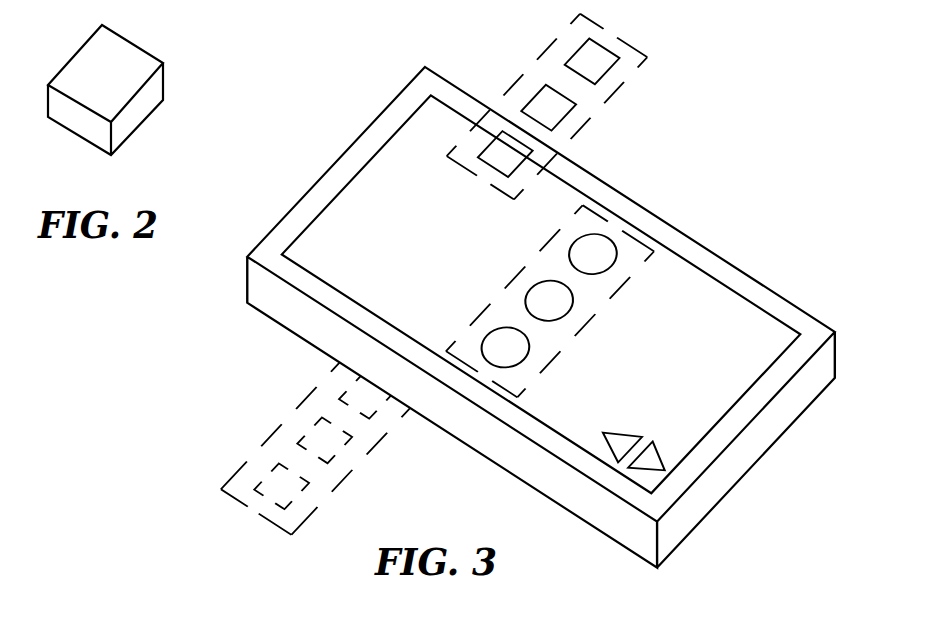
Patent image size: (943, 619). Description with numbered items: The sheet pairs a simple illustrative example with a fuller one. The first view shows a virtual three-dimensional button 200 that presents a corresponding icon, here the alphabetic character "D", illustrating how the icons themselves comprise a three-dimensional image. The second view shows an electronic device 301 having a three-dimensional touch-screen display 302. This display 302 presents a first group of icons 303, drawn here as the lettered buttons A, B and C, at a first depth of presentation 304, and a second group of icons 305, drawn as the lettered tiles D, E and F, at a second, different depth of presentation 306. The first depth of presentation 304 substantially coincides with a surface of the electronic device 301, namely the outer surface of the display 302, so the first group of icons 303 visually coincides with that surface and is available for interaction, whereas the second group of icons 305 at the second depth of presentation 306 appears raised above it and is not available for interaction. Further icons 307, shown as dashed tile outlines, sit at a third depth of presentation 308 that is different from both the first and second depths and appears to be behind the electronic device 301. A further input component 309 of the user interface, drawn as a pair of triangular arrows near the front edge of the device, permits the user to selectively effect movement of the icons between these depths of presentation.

In FIG. 2, the letter tile 200 is at (78, 117).
In FIG. 3, the electronic device 301 is at (550, 482).
In FIG. 3, the three-dimensional touch-screen display 302 is at (743, 320).
In FIG. 3, the first group of icons 303 is at (605, 269).
In FIG. 3, the first depth of presentation 304 is at (542, 268).
In FIG. 3, the second group of icons 305 is at (588, 41).
In FIG. 3, the second depth of presentation 306 is at (644, 55).
In FIG. 3, the icons 307 is at (377, 410).
In FIG. 3, the third depth of presentation 308 is at (299, 408).
In FIG. 3, the further input component 309 is at (657, 450).